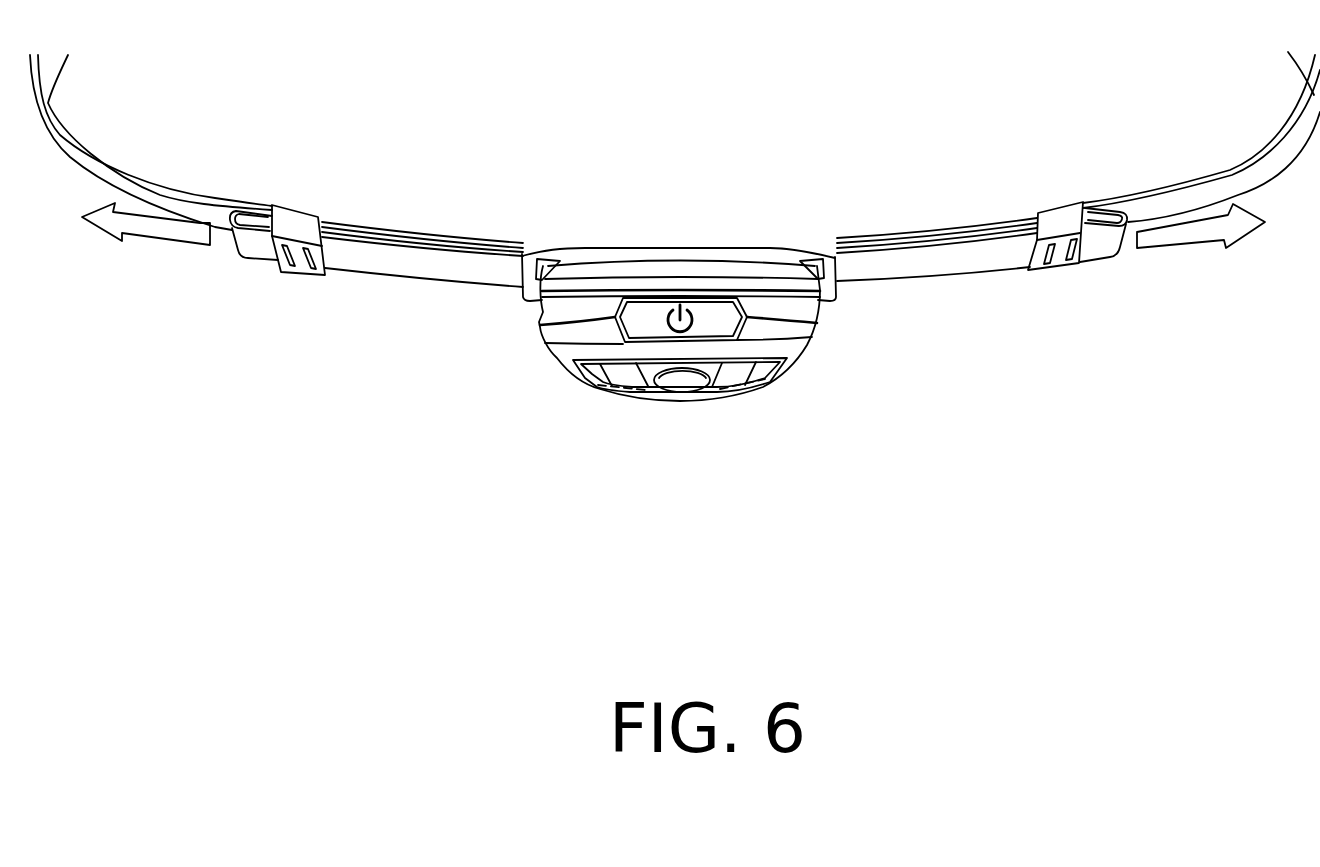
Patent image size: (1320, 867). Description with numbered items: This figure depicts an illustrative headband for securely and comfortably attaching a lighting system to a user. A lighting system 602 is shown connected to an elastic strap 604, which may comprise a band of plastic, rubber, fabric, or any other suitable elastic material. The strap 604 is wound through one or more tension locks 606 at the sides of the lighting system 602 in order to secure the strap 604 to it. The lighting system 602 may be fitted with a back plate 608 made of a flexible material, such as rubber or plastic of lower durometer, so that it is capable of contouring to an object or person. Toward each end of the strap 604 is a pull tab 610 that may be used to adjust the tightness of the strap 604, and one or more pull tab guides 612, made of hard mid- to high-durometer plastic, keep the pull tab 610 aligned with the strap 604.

The lighting system 602 is at (817, 338).
The elastic strap 604 is at (1177, 185).
The tension lock 606 is at (540, 253).
The back plate 608 is at (693, 252).
The pull tab 610 is at (248, 253).
The pull tab guide 612 is at (325, 270).